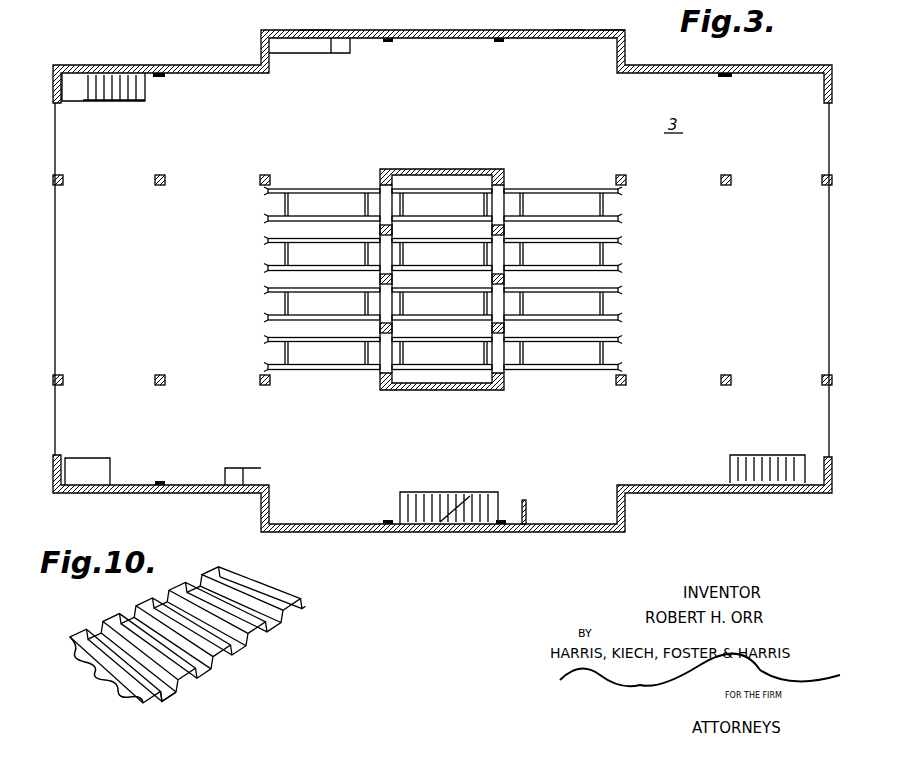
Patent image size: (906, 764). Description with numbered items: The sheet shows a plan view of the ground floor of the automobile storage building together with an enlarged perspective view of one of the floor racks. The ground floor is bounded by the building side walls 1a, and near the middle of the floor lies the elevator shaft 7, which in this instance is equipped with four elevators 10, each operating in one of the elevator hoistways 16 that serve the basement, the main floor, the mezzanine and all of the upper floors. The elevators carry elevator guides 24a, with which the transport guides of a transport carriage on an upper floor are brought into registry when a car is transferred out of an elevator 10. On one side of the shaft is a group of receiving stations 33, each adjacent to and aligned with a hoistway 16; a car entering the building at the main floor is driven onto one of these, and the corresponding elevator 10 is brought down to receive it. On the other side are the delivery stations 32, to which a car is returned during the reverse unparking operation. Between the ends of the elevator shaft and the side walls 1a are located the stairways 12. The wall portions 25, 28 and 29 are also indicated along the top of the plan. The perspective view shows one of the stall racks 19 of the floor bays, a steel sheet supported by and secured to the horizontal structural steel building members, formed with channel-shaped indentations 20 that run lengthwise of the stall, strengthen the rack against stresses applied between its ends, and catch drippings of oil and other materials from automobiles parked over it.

In FIG. 3, the side wall 1a is at (223, 65).
In FIG. 3, the elevator shaft 7 is at (472, 180).
In FIG. 3, the elevator 10 is at (442, 279).
In FIG. 3, the stairway 12 is at (465, 522).
In FIG. 3, the elevator hoistway 16 is at (473, 377).
In FIG. 10, the rack 19 is at (247, 622).
In FIG. 10, the channel-shaped indentation 20 is at (175, 683).
In FIG. 3, the elevator guide 24a is at (423, 205).
In FIG. 3, the wall element 25 is at (570, 30).
In FIG. 3, the wall element 28 is at (618, 30).
In FIG. 3, the wall element 29 is at (320, 30).
In FIG. 3, the delivery station 32 is at (590, 257).
In FIG. 3, the receiving station 33 is at (320, 203).